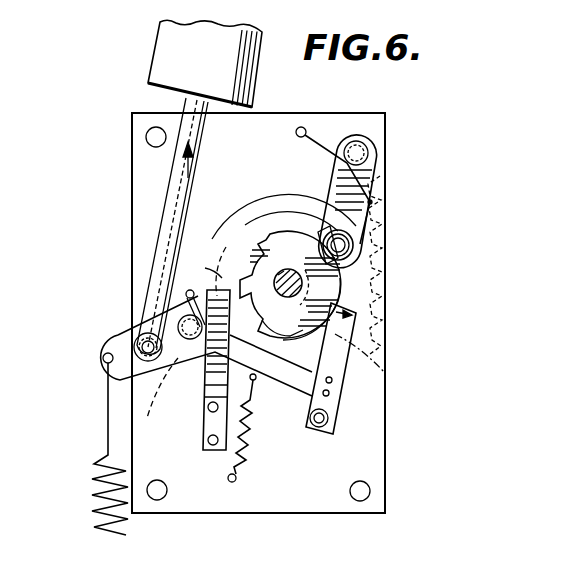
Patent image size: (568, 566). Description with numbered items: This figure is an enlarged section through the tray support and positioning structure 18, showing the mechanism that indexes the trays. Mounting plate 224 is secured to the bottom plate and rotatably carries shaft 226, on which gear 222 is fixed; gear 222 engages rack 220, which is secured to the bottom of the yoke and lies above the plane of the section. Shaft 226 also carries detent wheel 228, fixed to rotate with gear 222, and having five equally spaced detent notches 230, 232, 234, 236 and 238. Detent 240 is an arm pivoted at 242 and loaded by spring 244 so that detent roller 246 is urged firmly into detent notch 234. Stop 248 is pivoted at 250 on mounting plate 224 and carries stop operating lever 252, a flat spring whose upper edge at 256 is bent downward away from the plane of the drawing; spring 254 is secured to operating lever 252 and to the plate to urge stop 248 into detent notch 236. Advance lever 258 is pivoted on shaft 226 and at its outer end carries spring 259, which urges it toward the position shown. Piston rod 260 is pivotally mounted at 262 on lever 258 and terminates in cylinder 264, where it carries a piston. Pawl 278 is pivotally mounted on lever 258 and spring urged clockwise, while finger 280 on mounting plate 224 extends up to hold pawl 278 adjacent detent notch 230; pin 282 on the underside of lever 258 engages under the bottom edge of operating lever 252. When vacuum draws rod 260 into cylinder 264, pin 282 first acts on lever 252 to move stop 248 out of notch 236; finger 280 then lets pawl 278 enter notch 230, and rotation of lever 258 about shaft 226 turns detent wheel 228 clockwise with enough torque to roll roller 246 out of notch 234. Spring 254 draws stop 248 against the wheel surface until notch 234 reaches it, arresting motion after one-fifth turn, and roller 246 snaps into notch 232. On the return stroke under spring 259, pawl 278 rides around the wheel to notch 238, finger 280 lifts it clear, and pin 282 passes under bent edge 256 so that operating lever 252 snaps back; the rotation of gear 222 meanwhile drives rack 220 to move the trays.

The tray support and positioning structure 18 is at (407, 105).
The rack 220 is at (385, 248).
The gear 222 is at (388, 362).
The mounting plate 224 is at (362, 430).
The shaft 226 is at (292, 276).
The detent wheel 228 is at (294, 247).
The detent notch 230 is at (243, 240).
The detent notch 232 is at (267, 242).
The detent notch 234 is at (323, 228).
The detent notch 236 is at (340, 323).
The detent notch 238 is at (290, 284).
The detent 240 is at (370, 182).
The pivot 242 is at (366, 152).
The spring 244 is at (324, 140).
The detent roller 246 is at (360, 234).
The stop 248 is at (334, 353).
The pivot 250 is at (318, 428).
The stop operating lever 252 is at (270, 378).
The spring 254 is at (240, 446).
The bent upper edge 256 is at (185, 350).
The advance lever 258 is at (122, 340).
The spring 259 is at (95, 492).
The piston rod 260 is at (167, 205).
The pivot 262 is at (143, 338).
The cylinder 264 is at (168, 42).
The pawl 278 is at (230, 279).
The finger 280 is at (279, 338).
The pin 282 is at (165, 399).